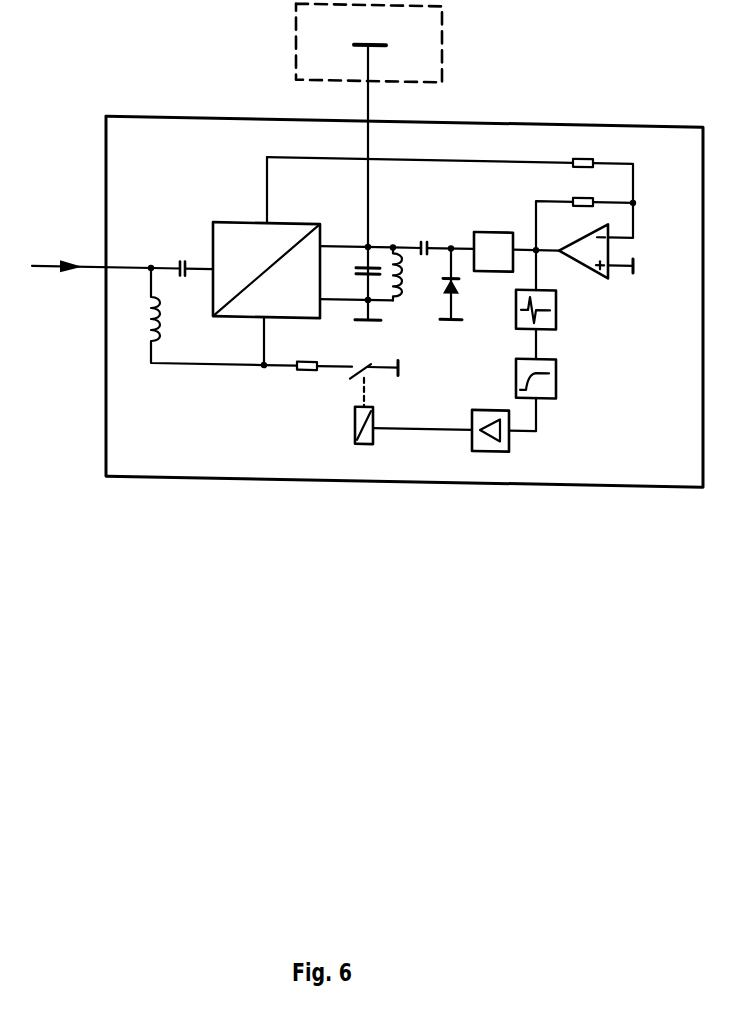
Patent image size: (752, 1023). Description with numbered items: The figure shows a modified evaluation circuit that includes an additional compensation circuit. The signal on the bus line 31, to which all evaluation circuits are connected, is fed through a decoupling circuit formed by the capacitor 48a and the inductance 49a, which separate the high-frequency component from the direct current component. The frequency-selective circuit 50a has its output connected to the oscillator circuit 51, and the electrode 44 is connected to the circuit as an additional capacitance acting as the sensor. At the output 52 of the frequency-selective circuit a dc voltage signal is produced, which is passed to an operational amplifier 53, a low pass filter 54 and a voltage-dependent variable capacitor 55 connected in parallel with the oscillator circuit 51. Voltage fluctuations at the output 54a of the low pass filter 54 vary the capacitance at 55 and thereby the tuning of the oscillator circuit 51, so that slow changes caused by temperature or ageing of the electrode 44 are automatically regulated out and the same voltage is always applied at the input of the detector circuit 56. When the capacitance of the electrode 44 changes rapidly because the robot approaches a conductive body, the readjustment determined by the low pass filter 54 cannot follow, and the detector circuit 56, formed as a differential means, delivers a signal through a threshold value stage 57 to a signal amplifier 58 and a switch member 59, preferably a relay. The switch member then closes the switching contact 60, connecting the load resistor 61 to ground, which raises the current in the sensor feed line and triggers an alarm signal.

The bus line 31 is at (44, 270).
The electrode 44 is at (369, 163).
The decoupling circuit capacitor 48a is at (181, 268).
The decoupling circuit inductance 49a is at (158, 299).
The frequency-selective circuit 50a is at (282, 212).
The oscillator circuit 51 is at (380, 250).
The output of the frequency-selective circuit 52 is at (266, 237).
The operational amplifier 53 is at (582, 237).
The low pass filter 54 is at (511, 232).
The output of the low pass filter 54a is at (452, 245).
The voltage-dependent variable capacitor 55 is at (463, 284).
The detector circuit 56 is at (553, 318).
The threshold value stage 57 is at (553, 394).
The signal amplifier 58 is at (503, 452).
The switch member 59 is at (354, 441).
The switching contact 60 is at (365, 369).
The load resistor 61 is at (317, 363).